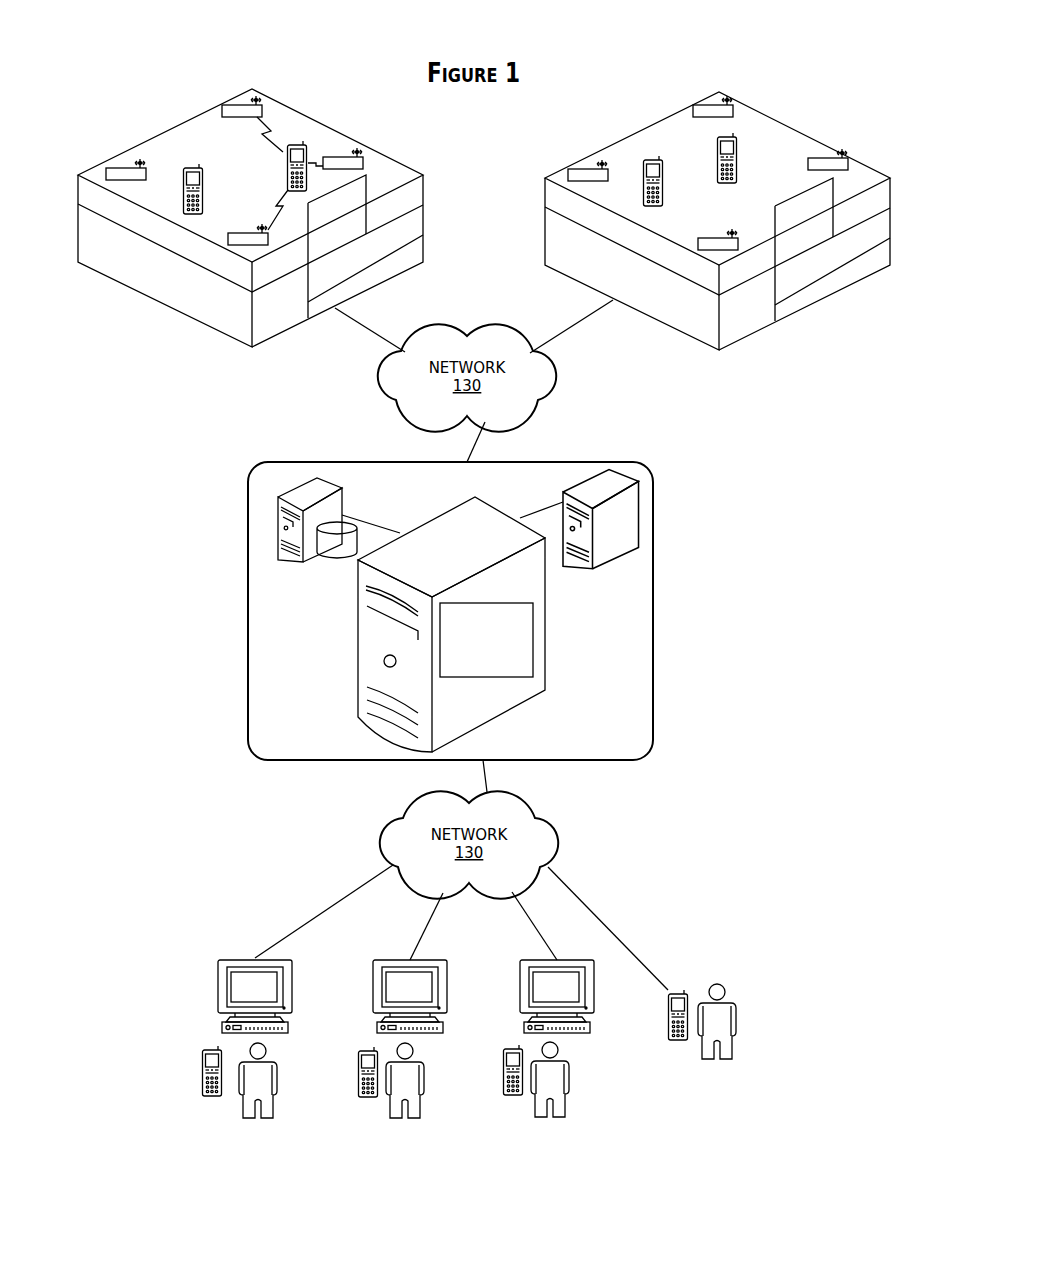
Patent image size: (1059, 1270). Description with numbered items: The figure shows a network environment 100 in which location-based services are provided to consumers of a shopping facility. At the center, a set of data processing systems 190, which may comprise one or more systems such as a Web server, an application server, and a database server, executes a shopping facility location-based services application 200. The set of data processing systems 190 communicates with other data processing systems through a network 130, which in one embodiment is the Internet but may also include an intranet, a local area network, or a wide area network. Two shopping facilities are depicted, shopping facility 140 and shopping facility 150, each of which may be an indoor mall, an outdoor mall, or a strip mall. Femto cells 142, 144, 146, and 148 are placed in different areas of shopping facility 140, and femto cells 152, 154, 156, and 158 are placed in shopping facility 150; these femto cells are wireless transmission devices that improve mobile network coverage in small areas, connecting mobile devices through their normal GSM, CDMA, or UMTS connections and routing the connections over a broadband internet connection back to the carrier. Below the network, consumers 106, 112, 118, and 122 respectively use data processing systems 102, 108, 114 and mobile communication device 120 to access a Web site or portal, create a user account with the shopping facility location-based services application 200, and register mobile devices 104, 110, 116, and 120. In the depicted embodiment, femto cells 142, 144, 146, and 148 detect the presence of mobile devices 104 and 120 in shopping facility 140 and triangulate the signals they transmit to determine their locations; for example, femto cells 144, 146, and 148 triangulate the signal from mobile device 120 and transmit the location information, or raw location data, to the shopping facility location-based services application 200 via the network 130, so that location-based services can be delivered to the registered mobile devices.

The network environment 100 is at (120, 61).
The data processing system 102 is at (216, 997).
The mobile device 104 is at (206, 170).
The consumer 106 is at (279, 1070).
The data processing system 108 is at (371, 993).
The mobile device 110 is at (669, 160).
The consumer 112 is at (426, 1065).
The data processing system 114 is at (518, 983).
The mobile device 116 is at (743, 138).
The consumer 118 is at (573, 1067).
The mobile communication device 120 is at (309, 142).
The consumer 122 is at (738, 1010).
The network 130 is at (461, 657).
The shopping facility 140 is at (162, 128).
The femto cell 142 is at (114, 167).
The femto cell 144 is at (239, 102).
The femto cell 146 is at (348, 155).
The femto cell 148 is at (246, 232).
The shopping facility 150 is at (641, 127).
The femto cell 152 is at (584, 167).
The femto cell 154 is at (734, 108).
The femto cell 156 is at (819, 157).
The femto cell 158 is at (707, 237).
The set of data processing systems 190 is at (239, 572).
The shopping facility location-based services application 200 is at (538, 615).